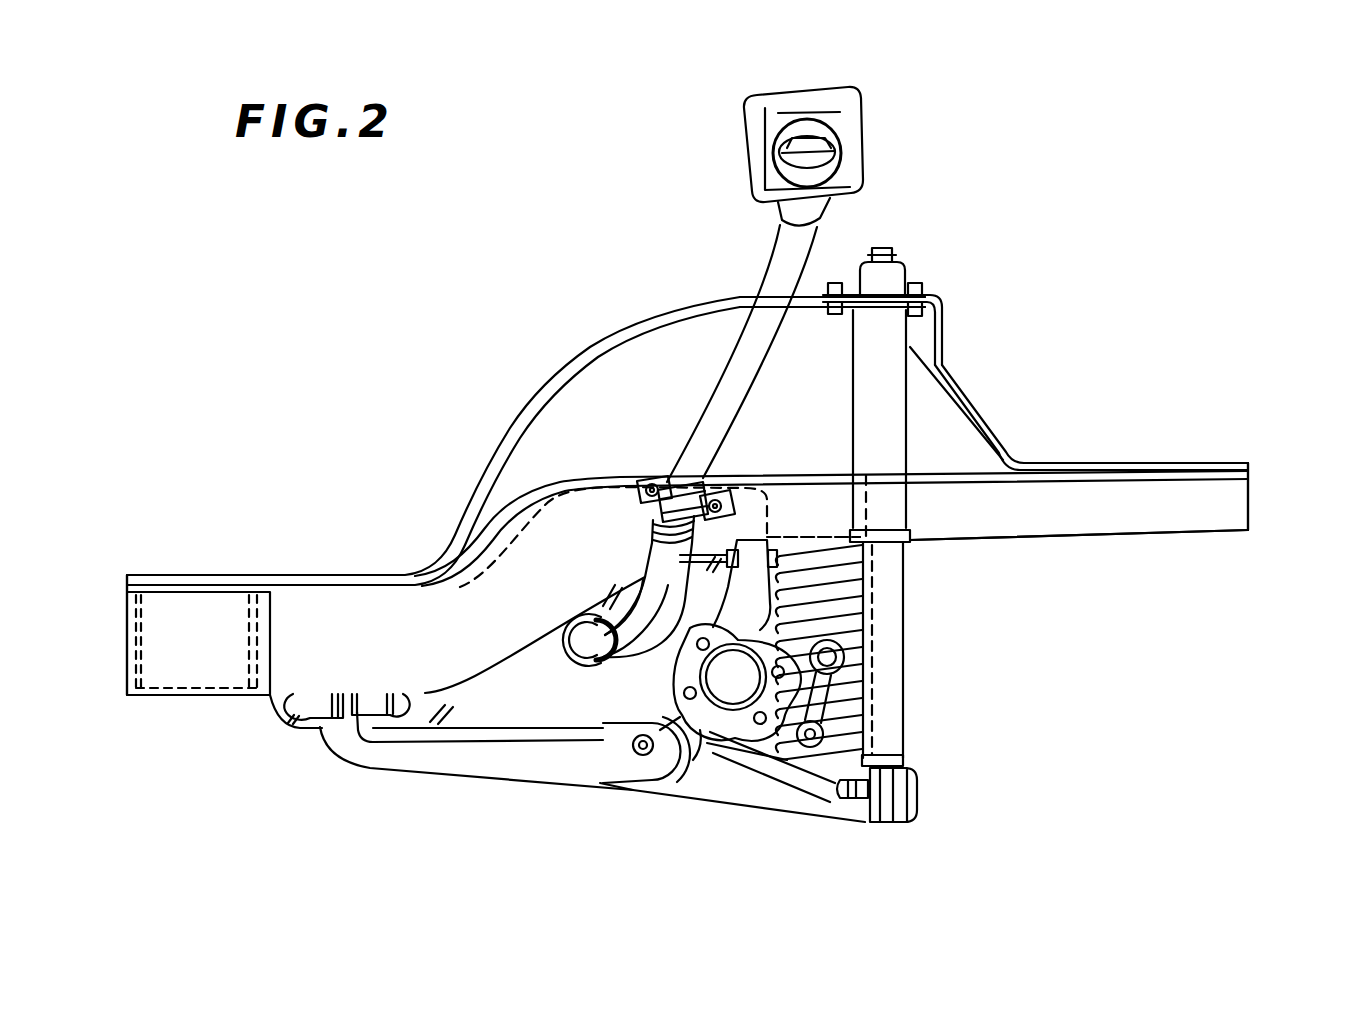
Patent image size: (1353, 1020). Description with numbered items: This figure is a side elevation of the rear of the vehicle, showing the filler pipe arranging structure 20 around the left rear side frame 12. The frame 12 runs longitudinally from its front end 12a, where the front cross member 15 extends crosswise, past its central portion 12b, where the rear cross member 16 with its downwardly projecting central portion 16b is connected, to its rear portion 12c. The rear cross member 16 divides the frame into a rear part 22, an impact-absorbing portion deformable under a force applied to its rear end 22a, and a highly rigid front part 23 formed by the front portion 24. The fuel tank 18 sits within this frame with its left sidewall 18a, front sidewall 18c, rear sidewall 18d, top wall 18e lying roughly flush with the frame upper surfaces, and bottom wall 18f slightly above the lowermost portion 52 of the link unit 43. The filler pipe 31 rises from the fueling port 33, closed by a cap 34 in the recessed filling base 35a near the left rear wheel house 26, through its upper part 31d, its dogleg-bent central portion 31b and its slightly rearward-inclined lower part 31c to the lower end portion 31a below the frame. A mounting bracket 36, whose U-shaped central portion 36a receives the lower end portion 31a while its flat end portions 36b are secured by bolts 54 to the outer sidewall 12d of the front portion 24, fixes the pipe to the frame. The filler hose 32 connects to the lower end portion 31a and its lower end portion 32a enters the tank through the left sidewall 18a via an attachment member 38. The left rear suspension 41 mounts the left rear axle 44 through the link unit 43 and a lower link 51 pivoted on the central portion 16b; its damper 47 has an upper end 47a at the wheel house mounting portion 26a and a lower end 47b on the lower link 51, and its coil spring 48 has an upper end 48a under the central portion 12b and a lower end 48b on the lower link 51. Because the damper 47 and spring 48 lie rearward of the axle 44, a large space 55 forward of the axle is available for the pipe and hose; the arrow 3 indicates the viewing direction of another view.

The view direction arrow for FIG. 3 is at (1075, 345).
The left rear side frame 12 is at (590, 470).
The front end 12a is at (150, 592).
The central portion 12b is at (827, 467).
The rear portion 12c is at (1193, 520).
The outer sidewall 12d is at (663, 665).
The front cross member 15 is at (130, 652).
The rear cross member 16 is at (923, 472).
The downwardly projecting central portion 16b is at (872, 703).
The fuel tank 18 is at (520, 558).
The left sidewall 18a is at (528, 735).
The front sidewall 18c is at (270, 697).
The rear sidewall 18d is at (862, 625).
The top wall 18e is at (500, 530).
The bottom wall 18f is at (447, 768).
The filler pipe arranging structure 20 is at (954, 216).
The rear part 22 is at (1158, 540).
The rear end 22a is at (1250, 501).
The front part 23 is at (560, 483).
The front portion 24 is at (617, 477).
The left rear wheel house 26 is at (662, 327).
The mounting portion 26a is at (948, 318).
The filler pipe 31 is at (765, 285).
The lower end portion 31a is at (655, 523).
The central portion 31b is at (793, 290).
The lower part 31c is at (740, 332).
The upper part 31d is at (772, 243).
The filler hose 32 is at (640, 600).
The lower end portion 32a is at (593, 700).
The fueling port 33 is at (840, 182).
The cap 34 is at (823, 135).
The recessed filling base 35a is at (816, 105).
The mounting bracket 36 is at (730, 468).
The central portion 36a is at (693, 442).
The end portions 36b is at (645, 503).
The attachment member 38 is at (580, 656).
The left rear suspension 41 is at (932, 817).
The link unit 43 is at (643, 797).
The left rear axle 44 is at (710, 747).
The damper 47 is at (873, 497).
The upper end 47a is at (883, 285).
The lower end 47b is at (900, 785).
The coil spring 48 is at (877, 660).
The upper end 48a is at (867, 550).
The lower end 48b is at (900, 748).
The lower link 51 is at (763, 797).
The lowermost portion 52 is at (897, 827).
The bolts 54 is at (648, 484).
The space 55 is at (783, 367).